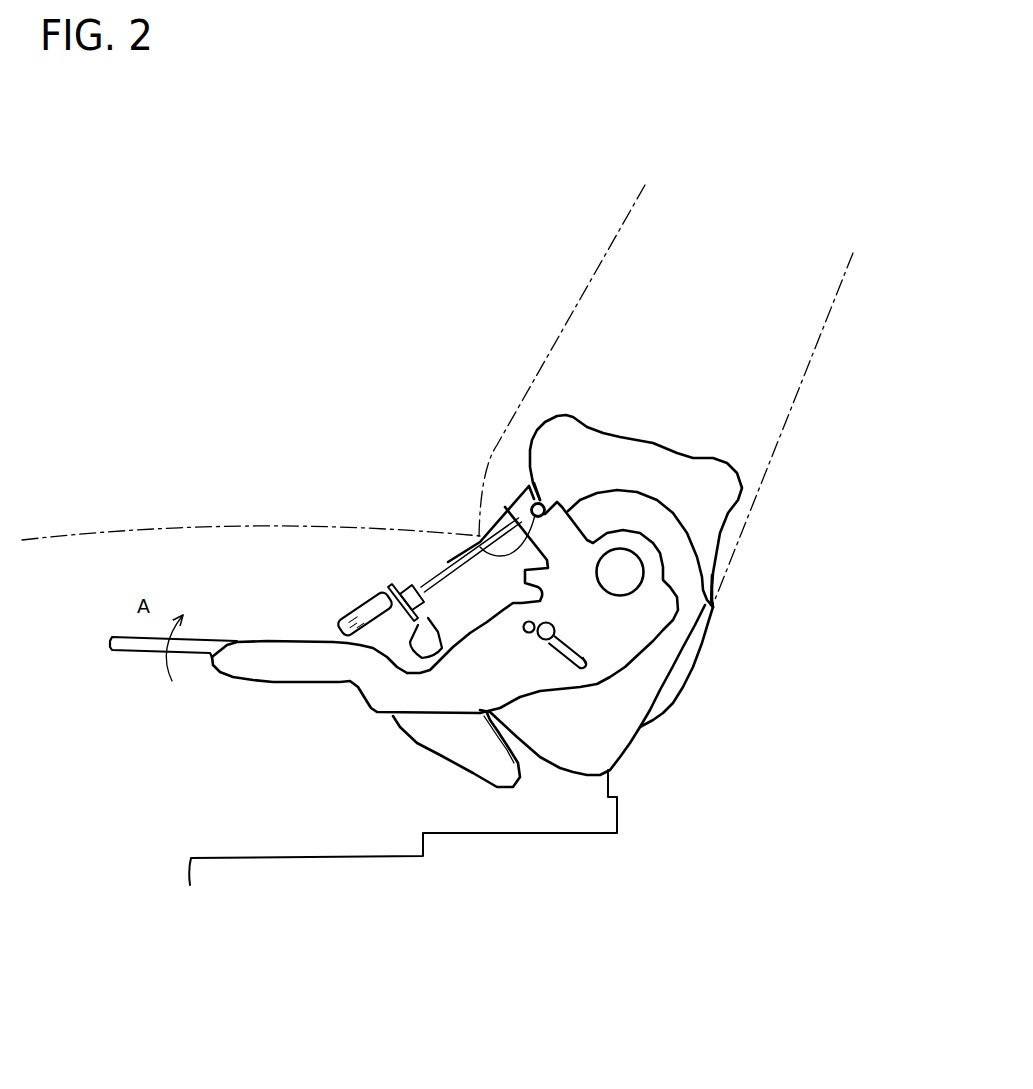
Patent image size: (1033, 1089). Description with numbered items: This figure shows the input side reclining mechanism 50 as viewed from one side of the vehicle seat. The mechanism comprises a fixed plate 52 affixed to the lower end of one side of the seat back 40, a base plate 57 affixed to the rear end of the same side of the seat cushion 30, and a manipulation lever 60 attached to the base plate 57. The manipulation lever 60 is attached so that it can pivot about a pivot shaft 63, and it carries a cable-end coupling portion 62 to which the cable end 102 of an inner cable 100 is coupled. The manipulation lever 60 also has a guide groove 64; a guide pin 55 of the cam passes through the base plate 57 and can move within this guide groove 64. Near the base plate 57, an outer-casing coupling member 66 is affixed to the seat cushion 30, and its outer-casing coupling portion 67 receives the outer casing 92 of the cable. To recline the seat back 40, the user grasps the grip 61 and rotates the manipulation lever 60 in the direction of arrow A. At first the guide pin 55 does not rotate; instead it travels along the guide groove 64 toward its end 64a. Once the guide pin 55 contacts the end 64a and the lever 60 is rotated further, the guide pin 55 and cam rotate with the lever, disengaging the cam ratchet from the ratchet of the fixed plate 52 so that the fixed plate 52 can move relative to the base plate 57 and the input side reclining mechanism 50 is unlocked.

The seat cushion 30 is at (107, 530).
The seat back 40 is at (606, 241).
The input side reclining mechanism 50 is at (358, 426).
The fixed plate 52 is at (744, 485).
The guide pin 55 is at (557, 633).
The base plate 57 is at (714, 605).
The manipulation lever 60 is at (519, 705).
The grip 61 is at (283, 641).
The cable-end coupling portion 62 is at (543, 500).
The pivot shaft 63 is at (635, 592).
The guide groove 64 is at (581, 669).
The end of guide groove 64a is at (587, 666).
The outer-casing coupling member 66 is at (425, 743).
The outer-casing coupling portion 67 is at (388, 587).
The outer casing 92 is at (145, 652).
The inner cable 100 is at (478, 543).
The cable end 102 is at (545, 502).